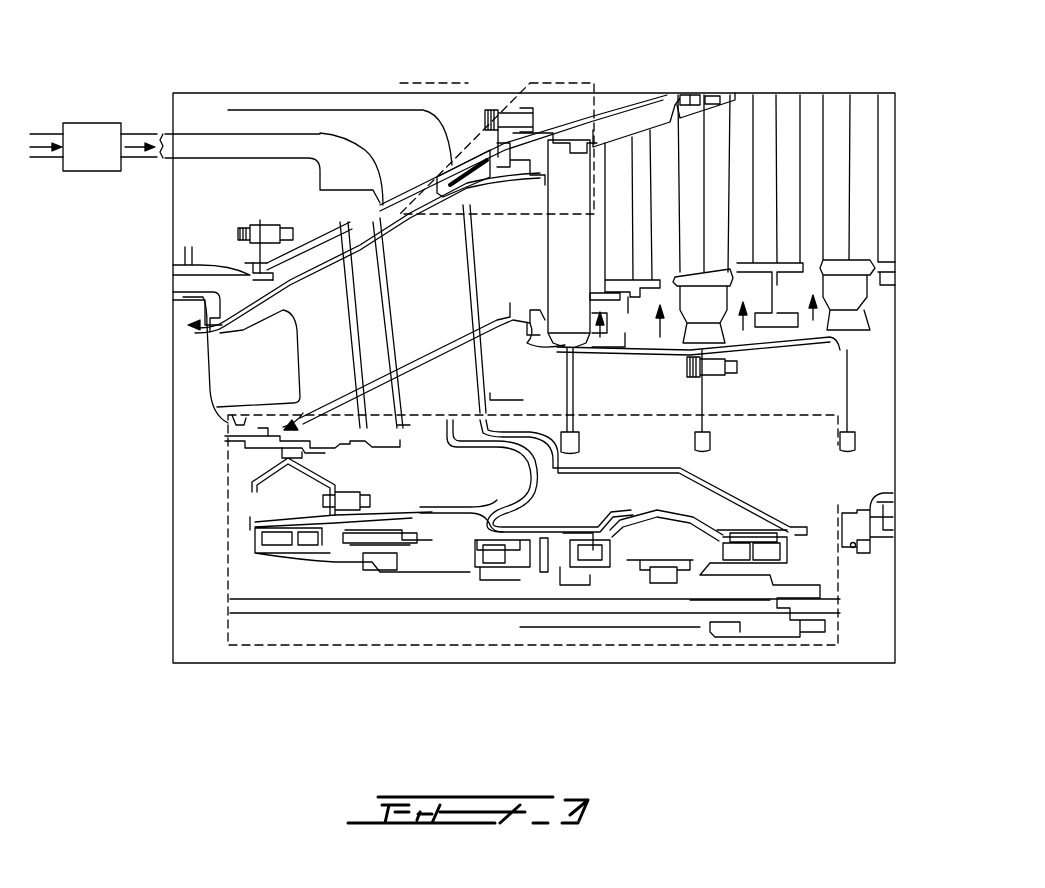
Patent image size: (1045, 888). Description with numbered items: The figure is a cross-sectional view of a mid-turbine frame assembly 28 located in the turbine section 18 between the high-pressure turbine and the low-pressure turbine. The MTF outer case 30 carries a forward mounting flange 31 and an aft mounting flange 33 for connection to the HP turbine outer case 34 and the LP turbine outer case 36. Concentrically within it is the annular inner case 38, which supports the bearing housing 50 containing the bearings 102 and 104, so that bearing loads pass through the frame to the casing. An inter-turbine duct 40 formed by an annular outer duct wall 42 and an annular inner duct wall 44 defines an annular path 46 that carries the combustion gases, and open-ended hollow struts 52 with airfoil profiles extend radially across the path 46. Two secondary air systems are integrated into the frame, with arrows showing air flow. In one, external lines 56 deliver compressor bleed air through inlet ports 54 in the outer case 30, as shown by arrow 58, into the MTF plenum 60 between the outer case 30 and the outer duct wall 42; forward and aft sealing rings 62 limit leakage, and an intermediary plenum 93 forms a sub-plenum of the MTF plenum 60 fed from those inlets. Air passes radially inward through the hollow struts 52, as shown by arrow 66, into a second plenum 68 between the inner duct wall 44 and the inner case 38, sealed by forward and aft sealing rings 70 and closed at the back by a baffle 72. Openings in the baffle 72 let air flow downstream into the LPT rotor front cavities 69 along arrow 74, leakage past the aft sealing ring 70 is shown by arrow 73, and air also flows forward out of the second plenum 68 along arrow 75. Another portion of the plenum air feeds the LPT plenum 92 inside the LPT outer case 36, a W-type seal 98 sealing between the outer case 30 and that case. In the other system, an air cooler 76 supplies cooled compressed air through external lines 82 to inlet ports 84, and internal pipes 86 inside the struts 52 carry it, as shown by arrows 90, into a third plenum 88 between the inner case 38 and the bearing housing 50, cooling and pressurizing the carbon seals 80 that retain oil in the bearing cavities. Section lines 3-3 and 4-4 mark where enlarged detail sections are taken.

The turbine section 18 is at (810, 88).
The mid-turbine frame assembly 28 is at (296, 205).
The MTF outer case 30 is at (383, 177).
The forward mounting flange 31 is at (263, 222).
The aft mounting flange 33 is at (508, 110).
The HP turbine outer case 34 is at (247, 263).
The LP turbine outer case 36 is at (540, 127).
The annular inner case 38 is at (463, 447).
The inter-turbine duct 40 is at (255, 355).
The annular outer duct wall 42 is at (487, 193).
The annular inner duct wall 44 is at (500, 317).
The annular path 46 is at (258, 358).
The bearing housing 50 is at (483, 510).
The hollow struts 52 is at (480, 277).
The inlet ports 54 is at (461, 152).
The external lines 56 is at (212, 107).
The arrow 58 is at (428, 125).
The MTF plenum 60 is at (457, 197).
The forward and aft sealing rings 62 is at (213, 297).
The arrow 66 is at (301, 300).
The second plenum 68 is at (414, 365).
The LPT rotor front cavities 69 is at (650, 340).
The forward and aft sealing rings 70 is at (228, 420).
The baffle 72 is at (470, 360).
The arrow 73 is at (542, 322).
The arrow 74 is at (495, 393).
The arrow 75 is at (227, 440).
The air cooler 76 is at (92, 132).
The carbon seals 80 is at (242, 542).
The external lines 82 is at (192, 147).
The inlet ports 84 is at (347, 183).
The internal pipes 86 is at (383, 297).
The third plenum 88 is at (435, 448).
The arrows 90 is at (287, 160).
The LPT plenum 92 is at (622, 118).
The intermediary plenum 93 is at (476, 166).
The seal 98 is at (385, 360).
The bearing 102 is at (387, 572).
The bearing 104 is at (664, 575).
The section line 3-3 is at (468, 79).
The section line 4-4 is at (833, 445).